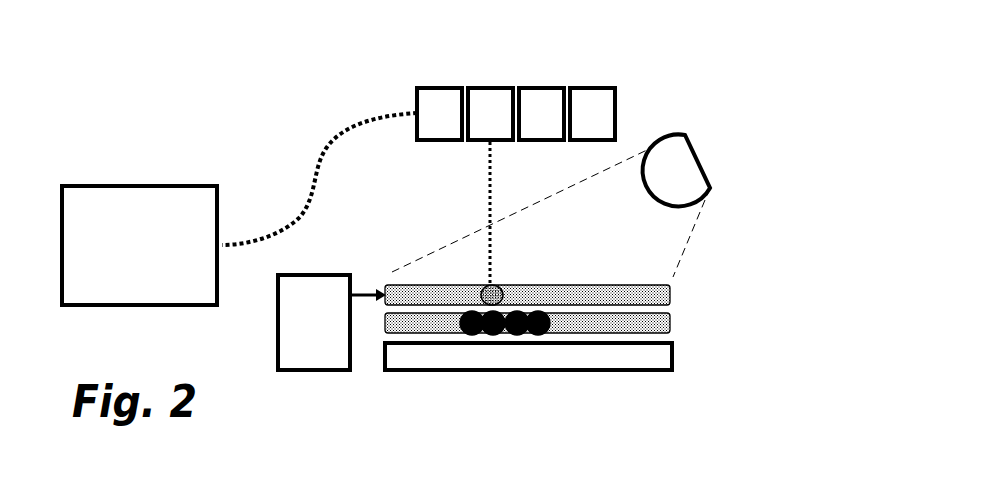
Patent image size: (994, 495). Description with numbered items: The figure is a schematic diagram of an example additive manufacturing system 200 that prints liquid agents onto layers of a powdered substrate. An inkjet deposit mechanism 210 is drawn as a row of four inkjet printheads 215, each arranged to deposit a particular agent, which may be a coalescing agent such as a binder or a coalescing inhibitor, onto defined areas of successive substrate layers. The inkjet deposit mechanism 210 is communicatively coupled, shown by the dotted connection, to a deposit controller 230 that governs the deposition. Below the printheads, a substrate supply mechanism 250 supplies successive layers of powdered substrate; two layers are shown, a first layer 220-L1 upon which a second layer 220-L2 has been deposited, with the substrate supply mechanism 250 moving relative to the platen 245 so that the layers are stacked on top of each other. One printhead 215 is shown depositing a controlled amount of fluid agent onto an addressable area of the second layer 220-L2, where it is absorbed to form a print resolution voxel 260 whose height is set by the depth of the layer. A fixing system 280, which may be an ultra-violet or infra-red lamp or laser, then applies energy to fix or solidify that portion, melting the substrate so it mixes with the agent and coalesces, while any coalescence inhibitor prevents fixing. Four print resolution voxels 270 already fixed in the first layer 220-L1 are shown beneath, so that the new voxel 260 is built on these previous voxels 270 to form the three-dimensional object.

The additive manufacturing system 200 is at (270, 70).
The inkjet deposit mechanism 210 is at (636, 70).
The inkjet printhead 215 is at (487, 87).
The first layer 220-L1 is at (670, 325).
The second layer 220-L2 is at (670, 297).
The deposit controller 230 is at (140, 186).
The platen 245 is at (422, 372).
The substrate supply mechanism 250 is at (294, 331).
The print resolution voxel 260 is at (493, 287).
The fixed print resolution voxels 270 is at (542, 314).
The fixing system 280 is at (697, 157).